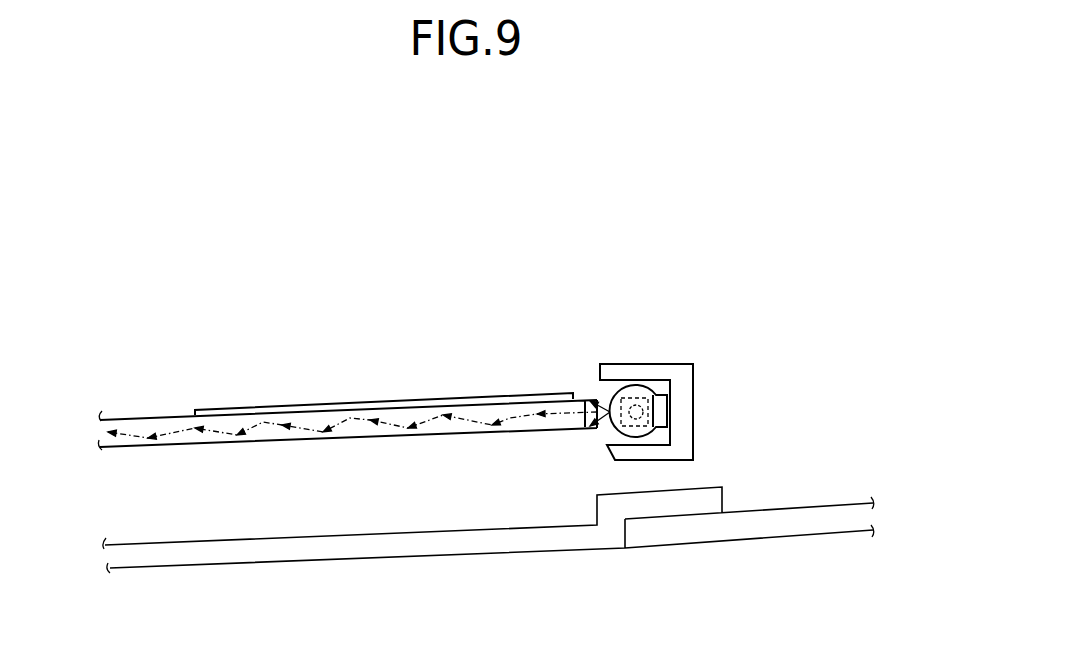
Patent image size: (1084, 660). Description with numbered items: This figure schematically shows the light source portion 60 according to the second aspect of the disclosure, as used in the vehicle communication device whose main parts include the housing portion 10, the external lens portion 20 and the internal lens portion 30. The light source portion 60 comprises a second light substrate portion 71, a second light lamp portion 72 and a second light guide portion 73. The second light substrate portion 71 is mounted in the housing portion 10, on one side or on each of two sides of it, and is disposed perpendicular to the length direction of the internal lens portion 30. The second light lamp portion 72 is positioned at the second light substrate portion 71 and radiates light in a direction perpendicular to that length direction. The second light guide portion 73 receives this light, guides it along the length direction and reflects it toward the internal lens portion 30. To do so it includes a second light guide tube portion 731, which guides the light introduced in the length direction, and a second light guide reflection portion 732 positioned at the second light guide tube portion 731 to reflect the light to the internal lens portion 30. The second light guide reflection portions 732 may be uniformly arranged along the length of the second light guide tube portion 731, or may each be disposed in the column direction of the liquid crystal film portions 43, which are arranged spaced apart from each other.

The housing portion 10 is at (638, 452).
The external lens portion 20 is at (320, 553).
The internal lens portion 30 is at (183, 437).
The liquid crystal film portion 43 is at (397, 402).
The light source portion 60 is at (757, 392).
The second light substrate portion 71 is at (635, 398).
The second light lamp portion 72 is at (640, 410).
The second light guide portion 73 is at (728, 430).
The second light guide tube portion 731 is at (650, 433).
The second light guide reflection portion 732 is at (667, 417).